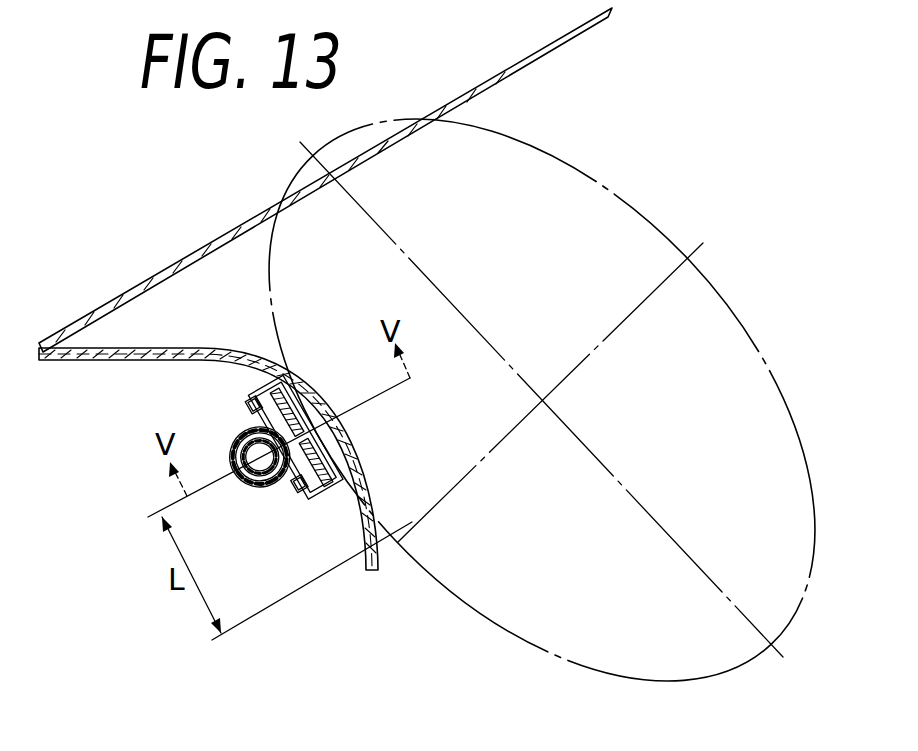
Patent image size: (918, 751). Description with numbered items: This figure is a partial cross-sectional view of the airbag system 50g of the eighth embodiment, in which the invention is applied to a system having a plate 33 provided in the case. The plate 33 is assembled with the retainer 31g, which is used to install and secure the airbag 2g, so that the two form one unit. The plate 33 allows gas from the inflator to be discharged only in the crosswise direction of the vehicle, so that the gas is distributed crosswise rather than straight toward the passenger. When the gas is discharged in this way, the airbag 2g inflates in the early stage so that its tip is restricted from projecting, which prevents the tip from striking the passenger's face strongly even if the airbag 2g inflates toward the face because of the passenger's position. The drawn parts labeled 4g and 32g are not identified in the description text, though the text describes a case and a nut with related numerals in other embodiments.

The airbag 2g is at (526, 596).
The airbag system 50g is at (140, 480).
The plate 33 is at (293, 438).
The pipe 4g is at (256, 413).
The retainer 31g is at (301, 437).
The clip 32g is at (299, 484).